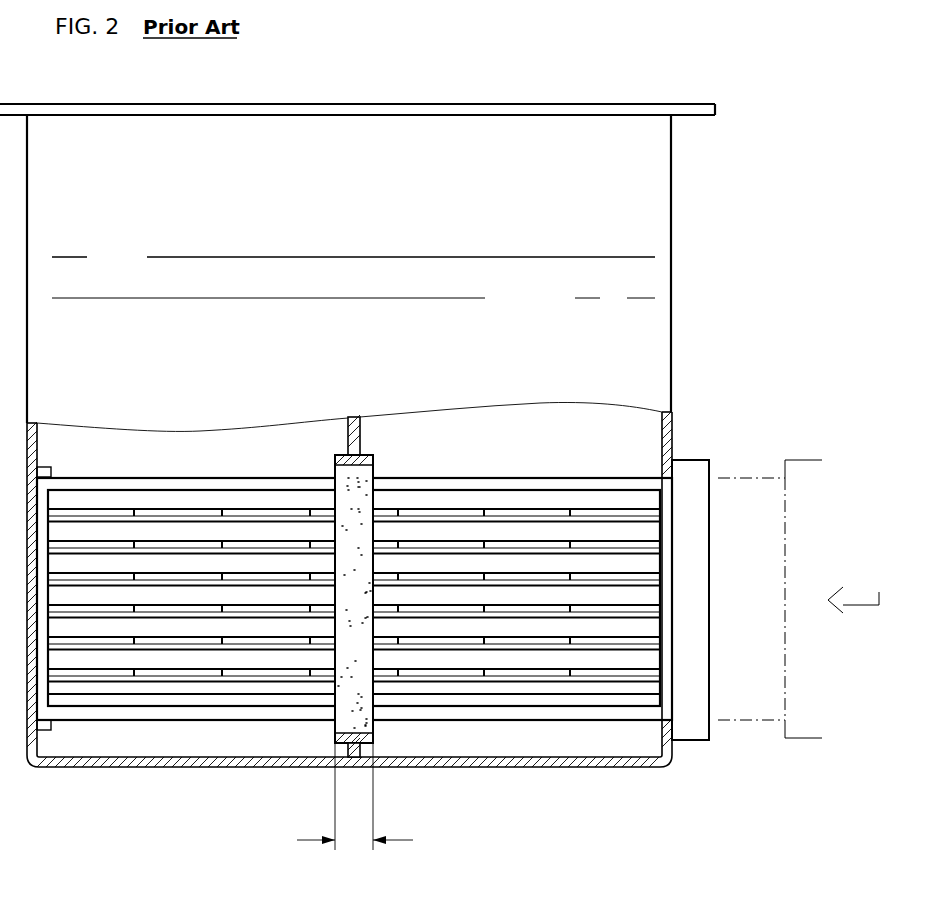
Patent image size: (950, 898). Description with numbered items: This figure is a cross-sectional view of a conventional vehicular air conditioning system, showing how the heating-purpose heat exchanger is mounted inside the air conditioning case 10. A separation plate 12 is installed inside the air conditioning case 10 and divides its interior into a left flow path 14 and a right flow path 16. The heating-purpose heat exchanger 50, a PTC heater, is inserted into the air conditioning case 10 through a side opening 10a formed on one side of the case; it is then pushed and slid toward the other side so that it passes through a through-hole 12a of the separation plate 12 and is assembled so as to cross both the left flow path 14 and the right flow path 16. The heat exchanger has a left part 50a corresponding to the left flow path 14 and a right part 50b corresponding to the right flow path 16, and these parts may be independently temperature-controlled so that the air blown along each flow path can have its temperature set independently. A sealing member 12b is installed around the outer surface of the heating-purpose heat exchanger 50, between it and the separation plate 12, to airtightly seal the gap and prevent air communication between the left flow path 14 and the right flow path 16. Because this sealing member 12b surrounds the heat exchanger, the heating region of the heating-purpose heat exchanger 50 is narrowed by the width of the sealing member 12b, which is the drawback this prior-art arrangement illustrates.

The air conditioning case 10 is at (665, 226).
The side opening 10a is at (672, 490).
The separation plate 12 is at (352, 456).
The through-hole 12a is at (378, 477).
The sealing member 12b is at (397, 513).
The left flow path 14 is at (194, 461).
The right flow path 16 is at (574, 461).
The heating-purpose heat exchanger 50 is at (621, 479).
The left part 50a is at (75, 720).
The right part 50b is at (458, 720).